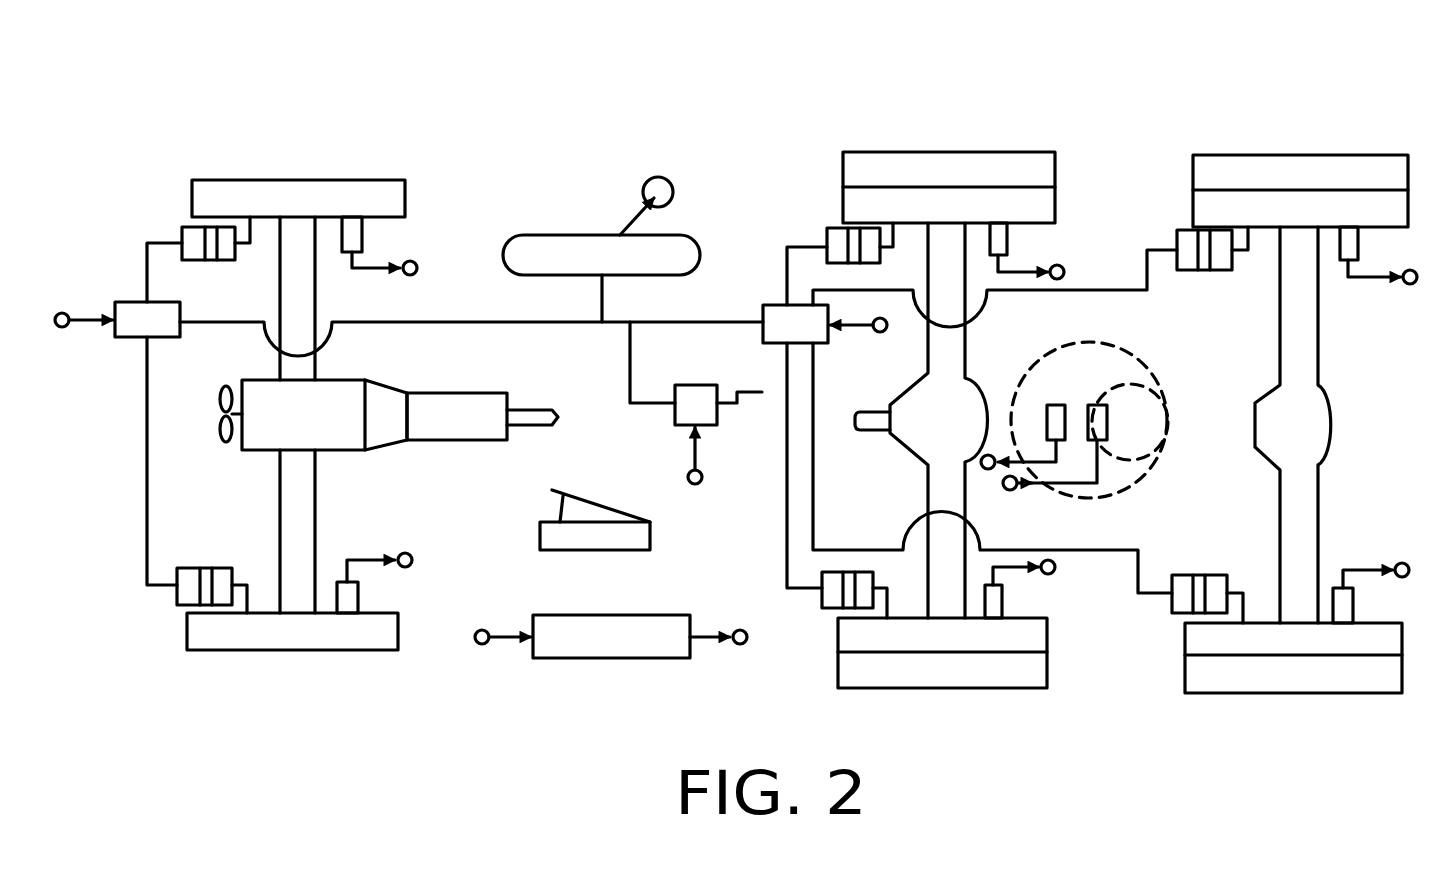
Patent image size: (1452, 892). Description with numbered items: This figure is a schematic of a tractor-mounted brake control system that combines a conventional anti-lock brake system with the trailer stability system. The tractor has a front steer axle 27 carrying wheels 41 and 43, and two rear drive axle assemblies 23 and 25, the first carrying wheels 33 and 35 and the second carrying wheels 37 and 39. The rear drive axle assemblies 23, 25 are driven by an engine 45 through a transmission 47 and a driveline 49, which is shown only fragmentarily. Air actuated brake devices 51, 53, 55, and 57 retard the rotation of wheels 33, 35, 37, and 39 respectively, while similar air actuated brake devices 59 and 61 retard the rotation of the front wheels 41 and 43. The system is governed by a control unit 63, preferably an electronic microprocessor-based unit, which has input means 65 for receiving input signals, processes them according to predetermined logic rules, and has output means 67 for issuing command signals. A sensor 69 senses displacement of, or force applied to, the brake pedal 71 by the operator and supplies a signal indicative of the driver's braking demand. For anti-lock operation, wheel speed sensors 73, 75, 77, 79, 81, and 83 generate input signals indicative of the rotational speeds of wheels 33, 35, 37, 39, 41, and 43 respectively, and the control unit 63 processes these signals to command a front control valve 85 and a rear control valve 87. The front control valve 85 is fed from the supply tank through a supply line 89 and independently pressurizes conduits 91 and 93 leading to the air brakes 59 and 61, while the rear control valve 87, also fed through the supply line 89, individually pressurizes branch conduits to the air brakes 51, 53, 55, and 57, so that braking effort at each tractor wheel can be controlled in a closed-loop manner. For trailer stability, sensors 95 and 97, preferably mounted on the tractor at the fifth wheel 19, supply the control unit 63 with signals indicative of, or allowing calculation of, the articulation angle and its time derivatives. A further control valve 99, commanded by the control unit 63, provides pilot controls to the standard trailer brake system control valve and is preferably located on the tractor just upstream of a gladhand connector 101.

The fifth wheel 19 is at (1143, 472).
The rear drive axle assembly 23 is at (908, 133).
The rear drive axle assembly 25 is at (1253, 135).
The front steer axle 27 is at (302, 133).
The wheel 33 is at (982, 165).
The wheel 35 is at (888, 675).
The wheel 37 is at (1342, 167).
The wheel 39 is at (1243, 680).
The wheel 41 is at (210, 187).
The wheel 43 is at (263, 642).
The engine 45 is at (347, 442).
The transmission 47 is at (437, 432).
The driveline 49 is at (528, 410).
The air actuated brake device 51 is at (825, 238).
The air actuated brake device 53 is at (832, 572).
The air actuated brake device 55 is at (1222, 270).
The air actuated brake device 57 is at (1182, 575).
The air actuated brake device 59 is at (187, 227).
The air actuated brake device 61 is at (193, 568).
The control unit 63 is at (580, 242).
The input means 65 is at (502, 640).
The output means 67 is at (705, 637).
The sensor 69 is at (635, 538).
The brake pedal 71 is at (590, 502).
The wheel speed sensor 73 is at (1003, 240).
The wheel speed sensor 75 is at (1000, 607).
The wheel speed sensor 77 is at (1353, 243).
The wheel speed sensor 79 is at (1347, 612).
The wheel speed sensor 81 is at (358, 238).
The wheel speed sensor 83 is at (352, 598).
The front control valve 85 is at (128, 330).
The rear control valve 87 is at (783, 313).
The supply line 89 is at (505, 321).
The conduit 91 is at (147, 272).
The conduit 93 is at (143, 485).
The sensor 95 is at (1055, 405).
The sensor 97 is at (1100, 405).
The control valve 99 is at (697, 388).
The gladhand connector 101 is at (755, 397).